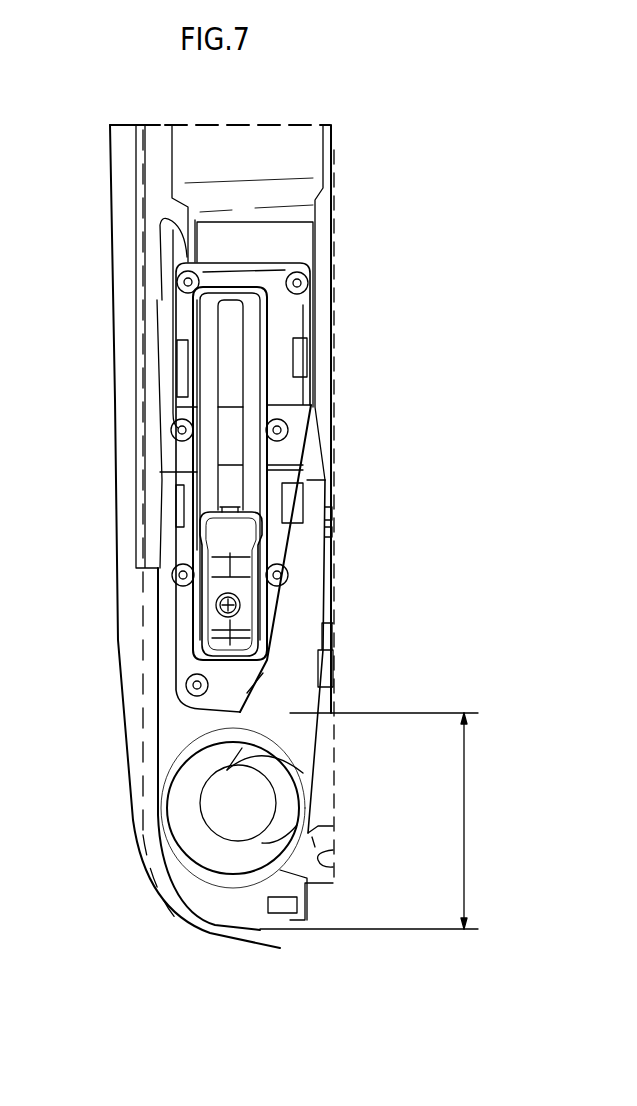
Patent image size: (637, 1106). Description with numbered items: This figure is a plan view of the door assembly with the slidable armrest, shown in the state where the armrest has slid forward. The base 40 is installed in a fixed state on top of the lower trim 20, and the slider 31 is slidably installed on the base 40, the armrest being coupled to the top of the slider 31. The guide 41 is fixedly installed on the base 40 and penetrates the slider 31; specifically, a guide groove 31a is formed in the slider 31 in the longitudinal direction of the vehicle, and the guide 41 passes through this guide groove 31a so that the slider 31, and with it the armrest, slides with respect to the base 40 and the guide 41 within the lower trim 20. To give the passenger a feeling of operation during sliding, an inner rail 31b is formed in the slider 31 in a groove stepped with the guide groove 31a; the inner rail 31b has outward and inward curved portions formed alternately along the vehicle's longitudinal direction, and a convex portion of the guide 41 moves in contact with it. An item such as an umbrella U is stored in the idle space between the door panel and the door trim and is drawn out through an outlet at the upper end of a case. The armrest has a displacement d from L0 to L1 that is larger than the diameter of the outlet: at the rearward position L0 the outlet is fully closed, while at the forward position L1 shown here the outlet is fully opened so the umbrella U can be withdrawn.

The lower trim 20 is at (313, 440).
The slider 31 is at (285, 338).
The guide groove 31a is at (225, 426).
The inner rail 31b is at (205, 330).
The base 40 is at (302, 617).
The guide 41 is at (218, 567).
The umbrella U is at (260, 805).
The forward maximum slide position L1 is at (397, 716).
The rearward maximum slide position L0 is at (382, 932).
The displacement d is at (474, 821).